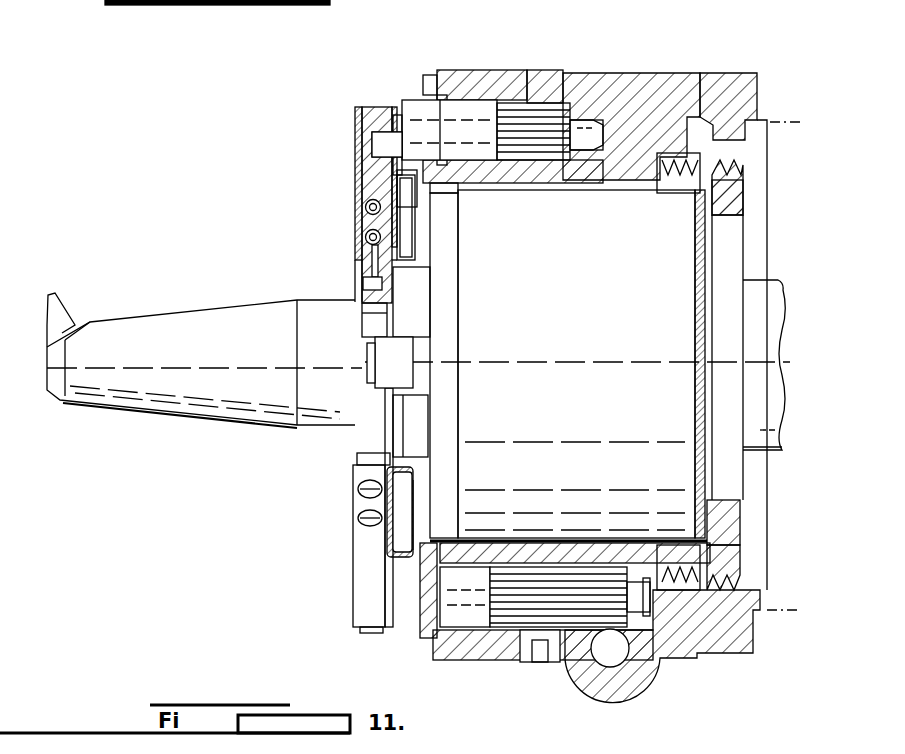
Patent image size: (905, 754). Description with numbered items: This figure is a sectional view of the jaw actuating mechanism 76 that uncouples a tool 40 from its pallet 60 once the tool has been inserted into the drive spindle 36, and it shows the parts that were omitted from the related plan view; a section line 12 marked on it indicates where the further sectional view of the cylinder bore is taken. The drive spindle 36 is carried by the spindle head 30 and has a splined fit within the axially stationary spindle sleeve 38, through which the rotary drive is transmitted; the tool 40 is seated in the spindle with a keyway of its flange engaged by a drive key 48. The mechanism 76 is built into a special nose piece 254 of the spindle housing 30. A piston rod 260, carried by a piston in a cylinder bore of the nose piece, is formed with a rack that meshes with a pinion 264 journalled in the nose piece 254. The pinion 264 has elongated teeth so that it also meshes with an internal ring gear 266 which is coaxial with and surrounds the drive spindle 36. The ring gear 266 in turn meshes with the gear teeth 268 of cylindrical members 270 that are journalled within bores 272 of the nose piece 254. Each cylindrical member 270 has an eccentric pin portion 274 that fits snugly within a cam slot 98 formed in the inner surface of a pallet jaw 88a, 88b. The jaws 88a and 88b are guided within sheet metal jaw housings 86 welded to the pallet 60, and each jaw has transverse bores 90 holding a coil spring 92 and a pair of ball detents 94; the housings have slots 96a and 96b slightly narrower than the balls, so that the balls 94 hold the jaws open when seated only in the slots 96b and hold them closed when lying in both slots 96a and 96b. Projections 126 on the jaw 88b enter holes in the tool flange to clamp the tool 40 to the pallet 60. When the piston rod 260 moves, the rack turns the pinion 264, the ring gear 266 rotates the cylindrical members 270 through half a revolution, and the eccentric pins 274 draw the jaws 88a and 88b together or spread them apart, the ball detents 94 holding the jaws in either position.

The section line 12- 12 is at (610, 440).
The spindle head 30 is at (740, 90).
The drive spindle 36 is at (400, 425).
The spindle sleeve 38 is at (633, 296).
The tool 40 is at (175, 328).
The drive key 48 is at (405, 352).
The pallet 60 is at (355, 135).
The jaw actuating mechanism 76 is at (641, 68).
The jaw housing 86 is at (356, 520).
The jaw 88a is at (372, 633).
The jaw 88b is at (368, 107).
The bore 90 is at (365, 210).
The coil spring 92 is at (382, 237).
The ball detent 94 is at (358, 490).
The slot 96a is at (378, 525).
The slot 96b is at (380, 492).
The cam slot 98 is at (382, 125).
The projection 126 is at (363, 285).
The nose piece 254 is at (672, 85).
The piston rod 260 is at (638, 666).
The pinion 264 is at (566, 590).
The internal ring gear 266 is at (533, 662).
The gear teeth 268 is at (583, 118).
The cylindrical member 270 is at (458, 110).
The bore 272 is at (555, 130).
The eccentric pin portion 274 is at (372, 150).